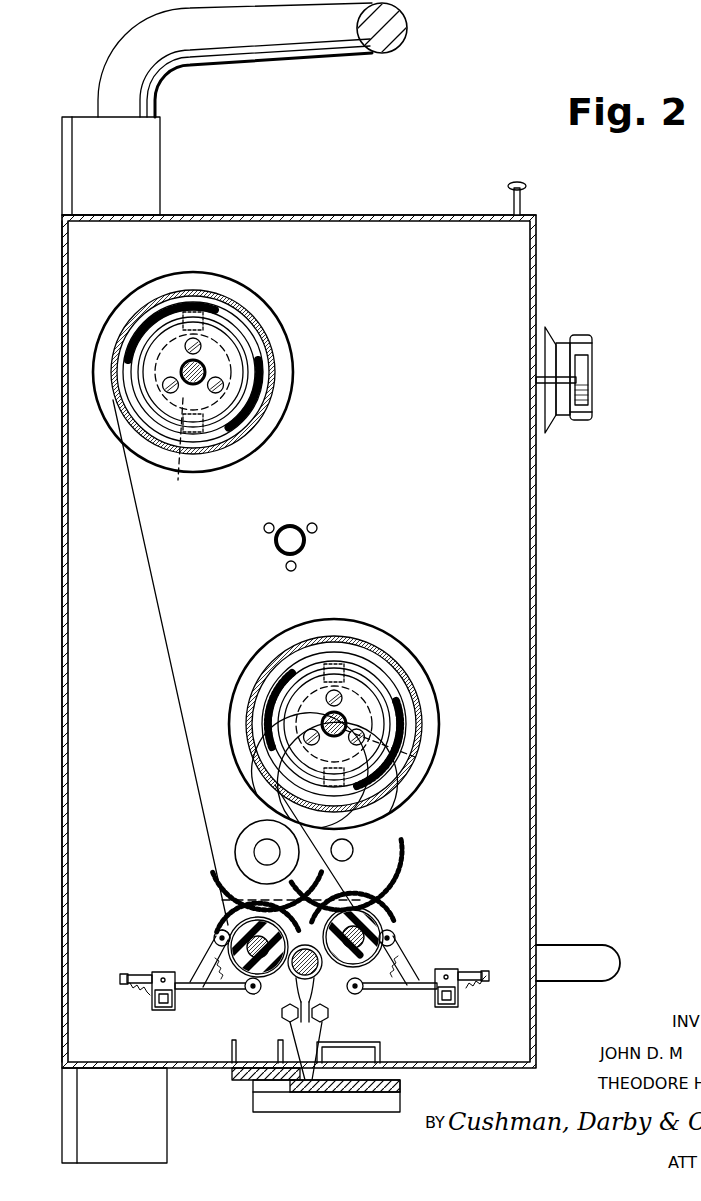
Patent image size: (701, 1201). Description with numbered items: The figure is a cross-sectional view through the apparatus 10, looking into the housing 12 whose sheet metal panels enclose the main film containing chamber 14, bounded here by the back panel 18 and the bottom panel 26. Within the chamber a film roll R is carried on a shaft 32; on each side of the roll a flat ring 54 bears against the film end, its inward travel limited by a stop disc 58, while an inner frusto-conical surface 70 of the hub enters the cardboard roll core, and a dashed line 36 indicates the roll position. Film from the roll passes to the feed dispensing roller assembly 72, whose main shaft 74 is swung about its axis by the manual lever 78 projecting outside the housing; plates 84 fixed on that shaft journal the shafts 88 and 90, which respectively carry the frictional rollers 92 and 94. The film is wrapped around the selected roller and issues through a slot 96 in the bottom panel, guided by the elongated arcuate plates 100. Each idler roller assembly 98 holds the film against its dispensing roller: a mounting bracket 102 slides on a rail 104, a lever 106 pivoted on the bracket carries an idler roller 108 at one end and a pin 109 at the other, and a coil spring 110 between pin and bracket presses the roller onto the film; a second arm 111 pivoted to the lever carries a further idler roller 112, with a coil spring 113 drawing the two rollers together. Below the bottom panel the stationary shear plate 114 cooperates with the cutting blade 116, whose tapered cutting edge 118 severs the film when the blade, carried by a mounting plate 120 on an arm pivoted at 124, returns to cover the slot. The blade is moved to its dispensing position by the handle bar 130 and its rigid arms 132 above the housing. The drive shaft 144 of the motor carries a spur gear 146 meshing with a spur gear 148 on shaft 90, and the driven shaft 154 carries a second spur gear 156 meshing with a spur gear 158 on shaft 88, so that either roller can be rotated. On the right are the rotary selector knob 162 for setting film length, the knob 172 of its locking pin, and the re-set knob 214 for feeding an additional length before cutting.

The apparatus 10 is at (544, 184).
The housing 12 is at (309, 215).
The main film containing chamber 14 is at (424, 327).
The back panel 18 is at (62, 286).
The bottom panel 26 is at (120, 1068).
The shaft 32 is at (200, 368).
The reel locating dashed line 36 is at (181, 482).
The flat ring 54 is at (198, 276).
The stop disc 58 is at (229, 408).
The inner frusto-conical surface 70 is at (246, 347).
The feed dispensing roller assembly 72 is at (328, 938).
The main shaft 74 is at (320, 988).
The manual lever 78 is at (565, 975).
The plates 84 is at (279, 1000).
The shaft 88 is at (265, 662).
The shaft 90 is at (247, 934).
The roller 92 is at (377, 930).
The roller 94 is at (230, 933).
The slot 96 is at (285, 1092).
The idler roller assemblies 98 is at (314, 989).
The elongated arcuate plates 100 is at (283, 1019).
The mounting bracket 102 is at (163, 972).
The rail 104 is at (164, 1007).
The lever 106 is at (216, 990).
The idler roller 108 is at (253, 994).
The pin 109 is at (134, 975).
The coil spring 110 is at (140, 990).
The second arm 111 is at (214, 964).
The idler roller 112 is at (214, 937).
The coil spring 113 is at (211, 950).
The stationary shear plate 114 is at (240, 1078).
The cutting blade 116 is at (340, 1092).
The tapered cutting edge 118 is at (290, 1085).
The mounting plate 120 is at (271, 1112).
The pivot 124 is at (300, 541).
The handle bar 130 is at (406, 28).
The rigid arms 132 is at (306, 47).
The drive shaft 144 is at (257, 851).
The spur gear 146 is at (218, 863).
The spur gear 148 is at (228, 906).
The driven shaft 154 is at (349, 848).
The second spur gear 156 is at (398, 855).
The spur gear 158 is at (340, 935).
The rotary selector knob 162 is at (586, 340).
The knob 172 is at (508, 186).
The re-set knob 214 is at (588, 373).
The film roll R is at (223, 306).